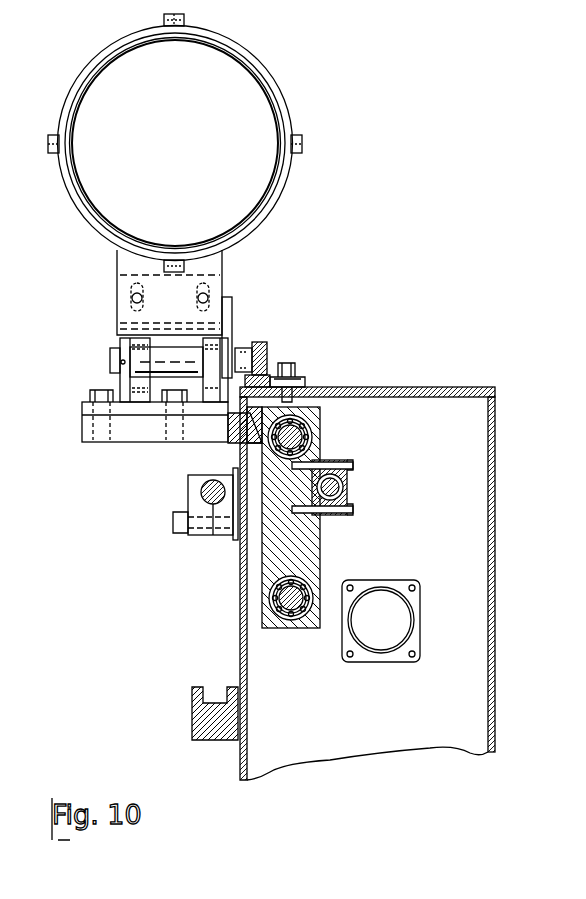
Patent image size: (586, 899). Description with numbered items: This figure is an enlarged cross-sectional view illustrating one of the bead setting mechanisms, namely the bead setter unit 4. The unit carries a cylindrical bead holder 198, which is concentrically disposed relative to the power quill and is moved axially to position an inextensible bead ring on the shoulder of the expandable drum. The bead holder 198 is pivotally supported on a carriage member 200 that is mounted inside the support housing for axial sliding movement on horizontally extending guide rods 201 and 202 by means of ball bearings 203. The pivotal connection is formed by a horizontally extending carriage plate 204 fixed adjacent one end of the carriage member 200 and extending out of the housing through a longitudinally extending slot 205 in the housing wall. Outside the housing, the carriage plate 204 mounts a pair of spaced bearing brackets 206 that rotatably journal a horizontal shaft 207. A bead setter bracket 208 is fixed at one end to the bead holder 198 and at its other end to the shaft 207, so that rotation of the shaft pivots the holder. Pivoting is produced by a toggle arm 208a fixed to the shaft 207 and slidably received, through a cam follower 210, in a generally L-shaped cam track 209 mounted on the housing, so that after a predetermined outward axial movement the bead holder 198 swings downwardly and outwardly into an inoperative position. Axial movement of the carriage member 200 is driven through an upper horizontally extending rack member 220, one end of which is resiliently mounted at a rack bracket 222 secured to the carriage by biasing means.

The bead setter unit 4 is at (66, 79).
The cylindrical bead holder 198 is at (271, 80).
The carriage member 200 is at (321, 560).
The guide rod 201 is at (306, 430).
The guide rod 202 is at (306, 594).
The ball bearings 203 is at (311, 440).
The carriage plate 204 is at (132, 437).
The slot 205 is at (240, 449).
The bearing brackets 206 is at (125, 395).
The shaft 207 is at (110, 359).
The bead setter bracket 208 is at (225, 284).
The toggle arm 208a is at (234, 312).
The cam track 209 is at (268, 355).
The cam follower 210 is at (247, 347).
The upper rack member 220 is at (348, 488).
The rack bracket 222 is at (348, 501).